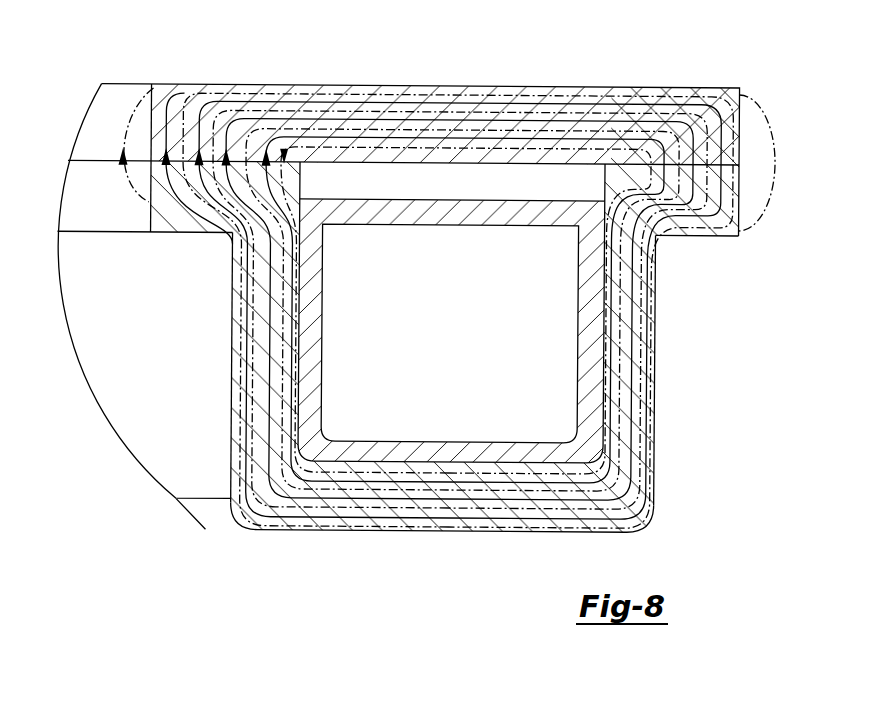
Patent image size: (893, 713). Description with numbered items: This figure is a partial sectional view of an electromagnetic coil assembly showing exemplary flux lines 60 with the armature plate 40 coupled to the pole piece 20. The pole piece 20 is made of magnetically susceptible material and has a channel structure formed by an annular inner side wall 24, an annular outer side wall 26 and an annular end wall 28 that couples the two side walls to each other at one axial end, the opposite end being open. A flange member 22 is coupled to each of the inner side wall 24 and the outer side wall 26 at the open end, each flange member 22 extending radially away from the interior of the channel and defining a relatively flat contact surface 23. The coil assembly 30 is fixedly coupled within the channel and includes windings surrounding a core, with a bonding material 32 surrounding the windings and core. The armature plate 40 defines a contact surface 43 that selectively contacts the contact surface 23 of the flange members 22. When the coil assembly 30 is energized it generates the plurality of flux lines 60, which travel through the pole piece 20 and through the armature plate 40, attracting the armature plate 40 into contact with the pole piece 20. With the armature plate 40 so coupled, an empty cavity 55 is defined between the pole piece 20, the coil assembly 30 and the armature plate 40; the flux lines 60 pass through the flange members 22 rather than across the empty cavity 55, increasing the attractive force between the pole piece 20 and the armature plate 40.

The pole piece 20 is at (646, 527).
The flange member 22 is at (188, 236).
The contact surface 23 is at (283, 152).
The inner side wall 24 is at (232, 365).
The outer side wall 26 is at (658, 357).
The end wall 28 is at (432, 533).
The coil assembly 30 is at (439, 338).
The bonding material 32 is at (596, 312).
The armature plate 40 is at (655, 86).
The contact surface 43 is at (184, 170).
The empty cavity 55 is at (448, 187).
The flux lines 60 is at (525, 100).